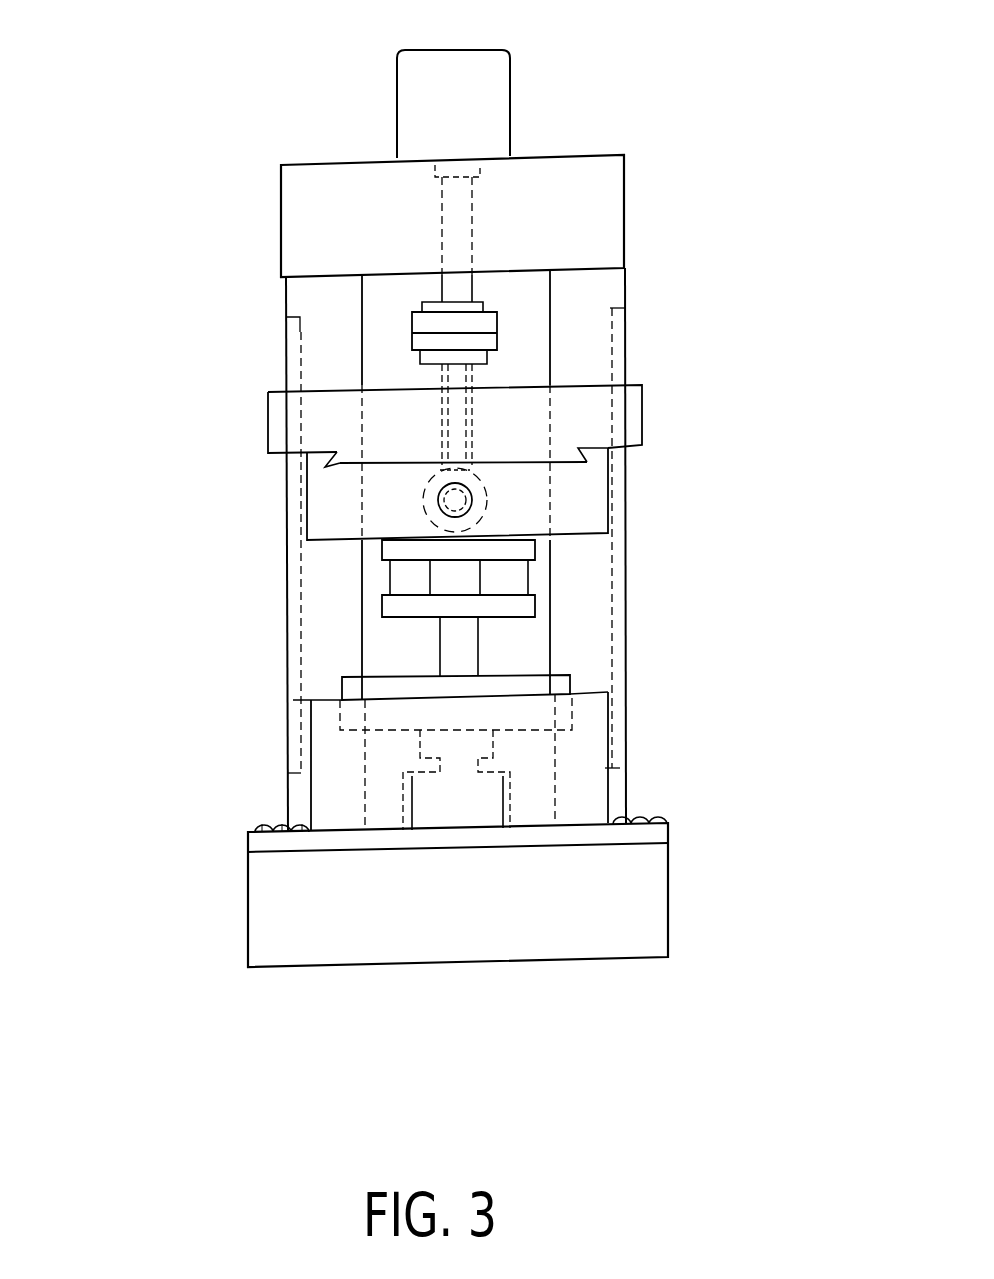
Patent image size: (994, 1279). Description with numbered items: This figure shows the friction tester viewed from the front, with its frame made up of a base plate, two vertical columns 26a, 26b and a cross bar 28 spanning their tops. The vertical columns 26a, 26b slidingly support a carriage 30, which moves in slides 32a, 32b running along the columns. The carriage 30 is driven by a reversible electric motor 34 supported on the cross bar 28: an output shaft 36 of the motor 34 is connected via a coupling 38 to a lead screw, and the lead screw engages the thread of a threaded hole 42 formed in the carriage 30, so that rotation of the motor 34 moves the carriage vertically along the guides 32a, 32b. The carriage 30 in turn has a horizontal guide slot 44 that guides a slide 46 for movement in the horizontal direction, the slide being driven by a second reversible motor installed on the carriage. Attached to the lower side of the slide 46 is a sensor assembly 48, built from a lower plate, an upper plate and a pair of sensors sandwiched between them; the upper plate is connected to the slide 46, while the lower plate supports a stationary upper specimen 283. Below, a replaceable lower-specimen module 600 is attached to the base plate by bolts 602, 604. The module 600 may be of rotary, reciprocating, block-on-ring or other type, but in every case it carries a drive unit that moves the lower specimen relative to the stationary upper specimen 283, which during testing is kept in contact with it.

The vertical column 26a is at (628, 523).
The vertical column 26b is at (283, 577).
The cross bar 28 is at (600, 195).
The carriage 30 is at (268, 432).
The slide 32a is at (620, 347).
The slide 32b is at (285, 353).
The reversible electric motor 34 is at (503, 97).
The output shaft 36 is at (452, 233).
The coupling 38 is at (422, 325).
The threaded hole 42 is at (437, 440).
The horizontal guide slot 44 is at (603, 445).
The slide 46 is at (583, 490).
The sensor assembly 48 is at (538, 575).
The stationary upper specimen 283 is at (467, 648).
The replaceable lower-specimen module 600 is at (608, 741).
The bolt 602 is at (255, 818).
The bolt 604 is at (658, 815).